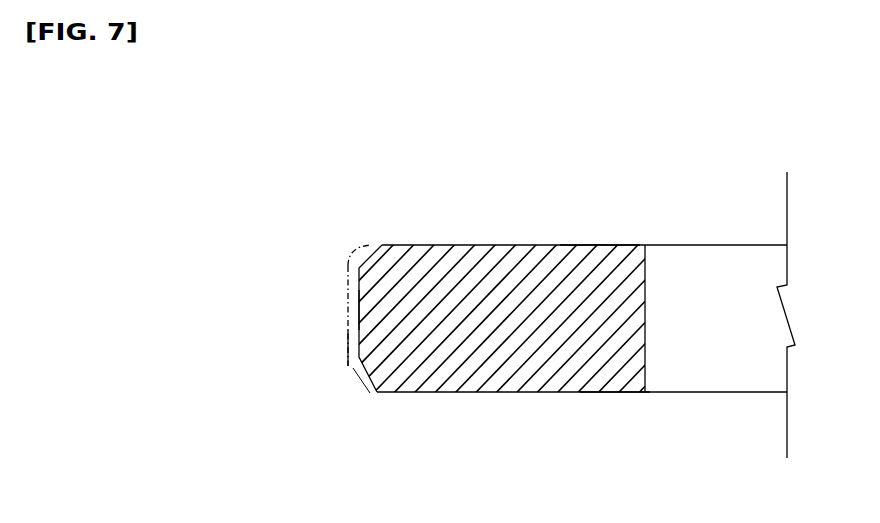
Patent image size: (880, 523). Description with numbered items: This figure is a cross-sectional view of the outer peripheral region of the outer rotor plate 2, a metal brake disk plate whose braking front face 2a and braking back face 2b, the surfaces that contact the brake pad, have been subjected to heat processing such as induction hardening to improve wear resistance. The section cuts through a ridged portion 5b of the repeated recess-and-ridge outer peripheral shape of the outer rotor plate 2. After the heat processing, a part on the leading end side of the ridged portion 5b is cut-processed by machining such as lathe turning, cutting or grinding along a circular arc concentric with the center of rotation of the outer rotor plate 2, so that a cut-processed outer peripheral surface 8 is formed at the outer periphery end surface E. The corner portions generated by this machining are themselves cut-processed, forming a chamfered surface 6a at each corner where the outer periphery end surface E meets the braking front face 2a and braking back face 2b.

The outer rotor plate 2 is at (531, 243).
The braking front face 2a is at (615, 394).
The braking back face 2b is at (592, 244).
The ridged portion 5b is at (354, 345).
The chamfered surface 6a is at (367, 257).
The cut-processed outer peripheral surface 8 is at (358, 309).
The outer periphery end surface E is at (353, 282).